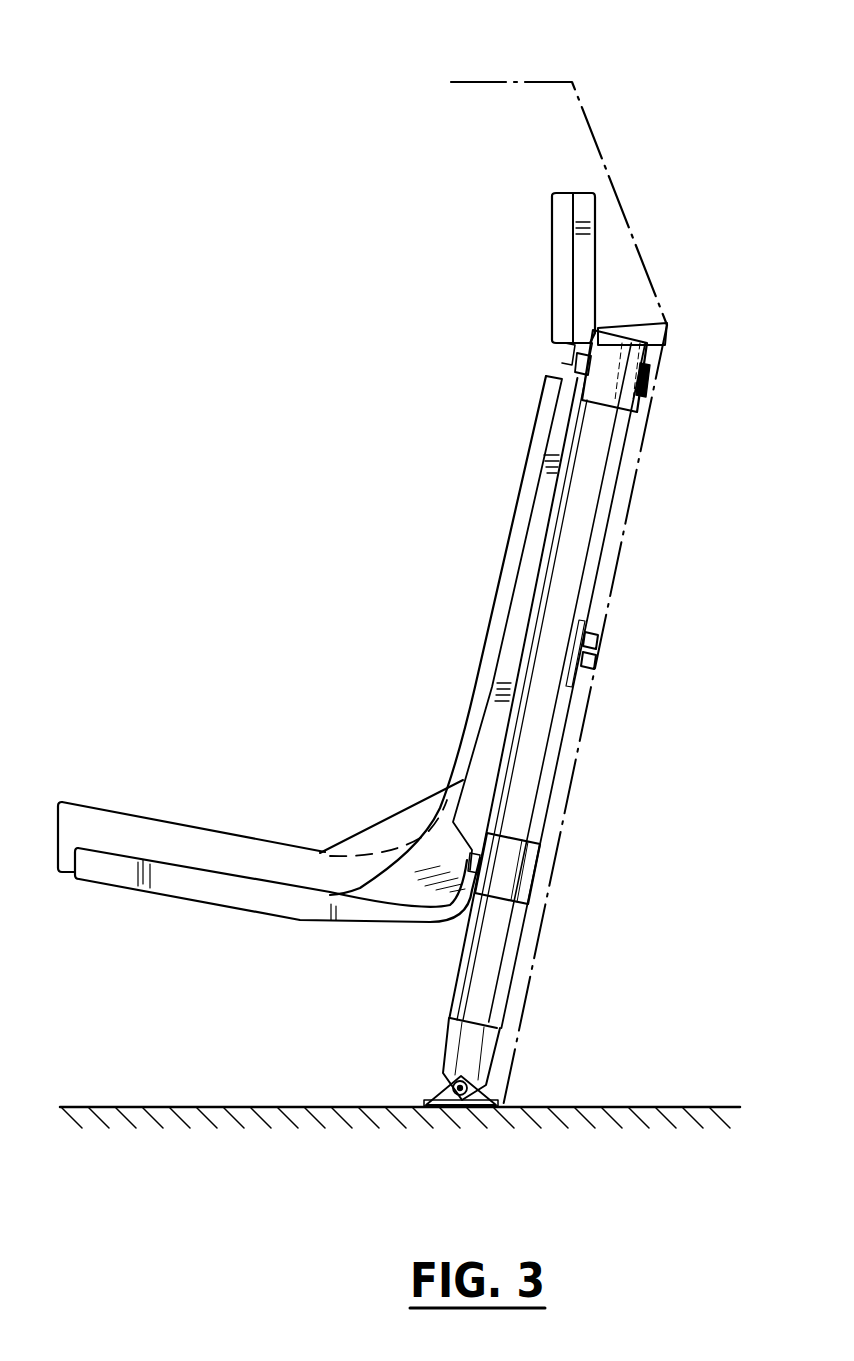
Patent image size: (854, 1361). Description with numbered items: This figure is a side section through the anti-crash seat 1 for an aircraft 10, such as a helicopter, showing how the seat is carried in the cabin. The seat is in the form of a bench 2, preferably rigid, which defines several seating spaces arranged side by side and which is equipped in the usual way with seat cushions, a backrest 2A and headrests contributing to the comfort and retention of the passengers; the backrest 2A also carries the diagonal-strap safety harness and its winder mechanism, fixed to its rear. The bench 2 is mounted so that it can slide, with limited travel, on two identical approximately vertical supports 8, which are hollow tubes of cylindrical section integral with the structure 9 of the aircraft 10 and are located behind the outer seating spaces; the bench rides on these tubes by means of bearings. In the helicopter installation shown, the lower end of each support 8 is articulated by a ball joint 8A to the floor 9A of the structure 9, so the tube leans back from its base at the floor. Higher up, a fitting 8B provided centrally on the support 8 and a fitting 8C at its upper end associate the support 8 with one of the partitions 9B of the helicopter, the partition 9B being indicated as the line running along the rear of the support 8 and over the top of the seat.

The anti-crash seat 1 is at (300, 333).
The bench 2 is at (522, 488).
The backrest 2A is at (508, 643).
The support 8 is at (538, 812).
The ball joint 8A is at (444, 1075).
The fitting 8B is at (597, 662).
The fitting 8C is at (668, 336).
The structure 9 is at (679, 1106).
The floor 9A is at (165, 1106).
The partition 9B is at (614, 581).
The aircraft 10 is at (452, 72).